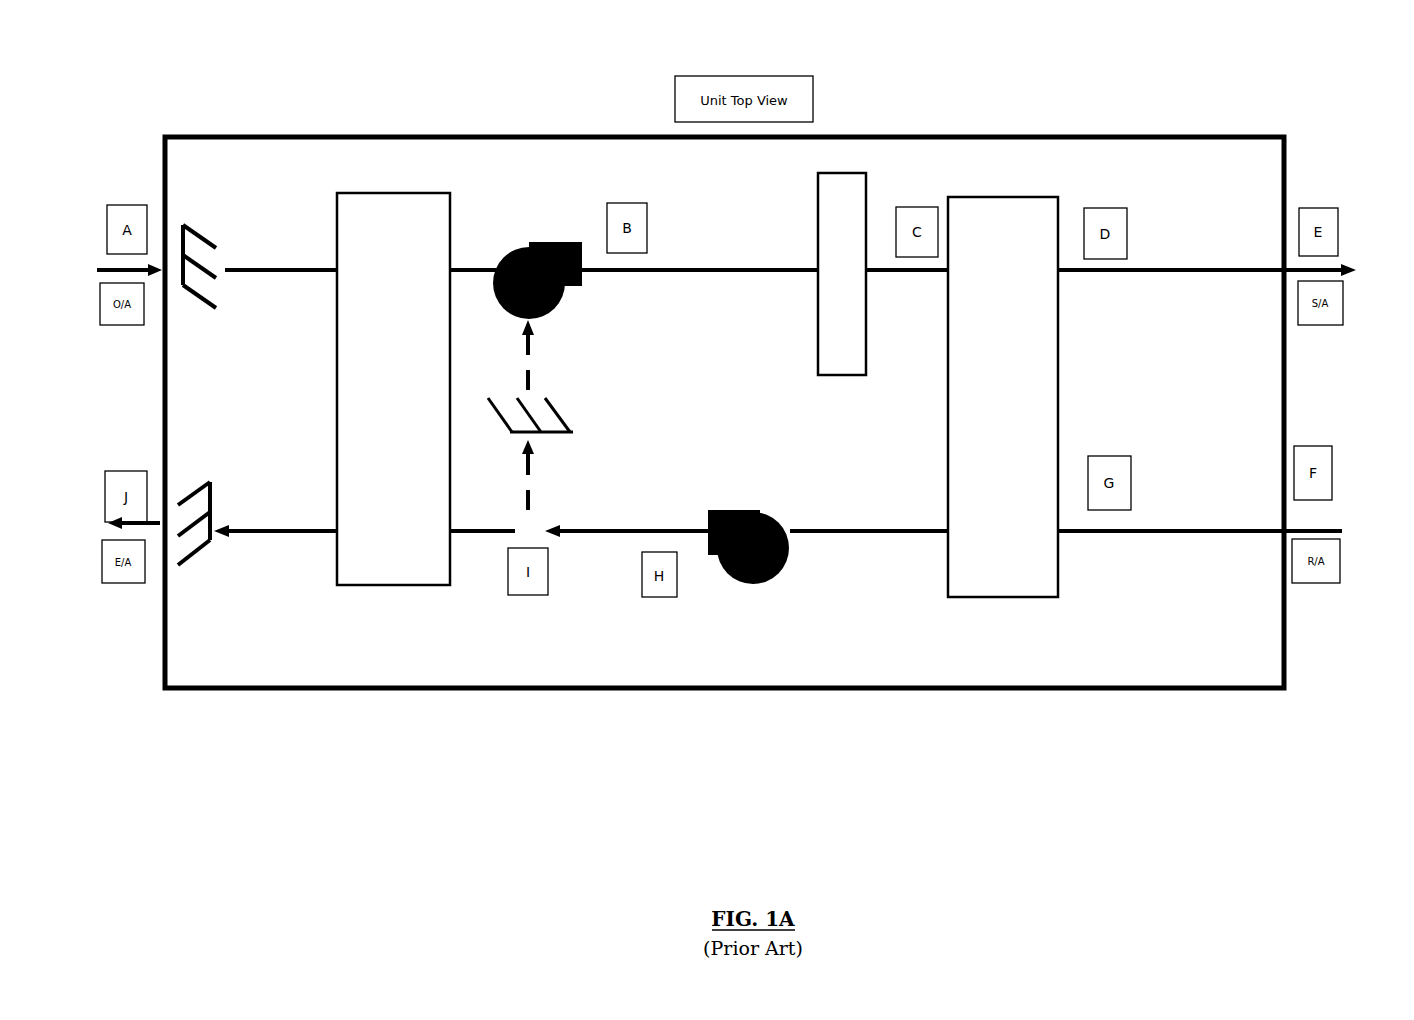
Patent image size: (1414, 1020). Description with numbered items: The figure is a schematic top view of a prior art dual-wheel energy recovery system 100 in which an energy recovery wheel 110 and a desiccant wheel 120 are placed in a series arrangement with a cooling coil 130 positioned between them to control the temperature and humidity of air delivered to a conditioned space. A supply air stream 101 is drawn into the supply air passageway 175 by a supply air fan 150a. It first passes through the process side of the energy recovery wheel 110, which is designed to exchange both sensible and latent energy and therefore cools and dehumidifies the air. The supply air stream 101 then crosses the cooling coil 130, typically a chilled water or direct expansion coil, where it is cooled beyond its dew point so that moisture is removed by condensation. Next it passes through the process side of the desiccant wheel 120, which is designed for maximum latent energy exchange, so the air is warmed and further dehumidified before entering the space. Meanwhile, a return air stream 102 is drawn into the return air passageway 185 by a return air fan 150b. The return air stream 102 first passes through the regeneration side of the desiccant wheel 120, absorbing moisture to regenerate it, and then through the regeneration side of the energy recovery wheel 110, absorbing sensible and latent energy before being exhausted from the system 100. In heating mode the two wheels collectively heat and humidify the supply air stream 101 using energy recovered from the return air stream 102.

The system 100 is at (226, 116).
The supply air stream 101 is at (91, 262).
The return air stream 102 is at (1342, 517).
The energy recovery wheel 110 is at (375, 456).
The desiccant wheel 120 is at (980, 464).
The cooling coil 130 is at (830, 324).
The supply air fan 150a is at (540, 232).
The return air fan 150b is at (742, 500).
The supply air passageway 175 is at (752, 255).
The return air passageway 185 is at (868, 546).